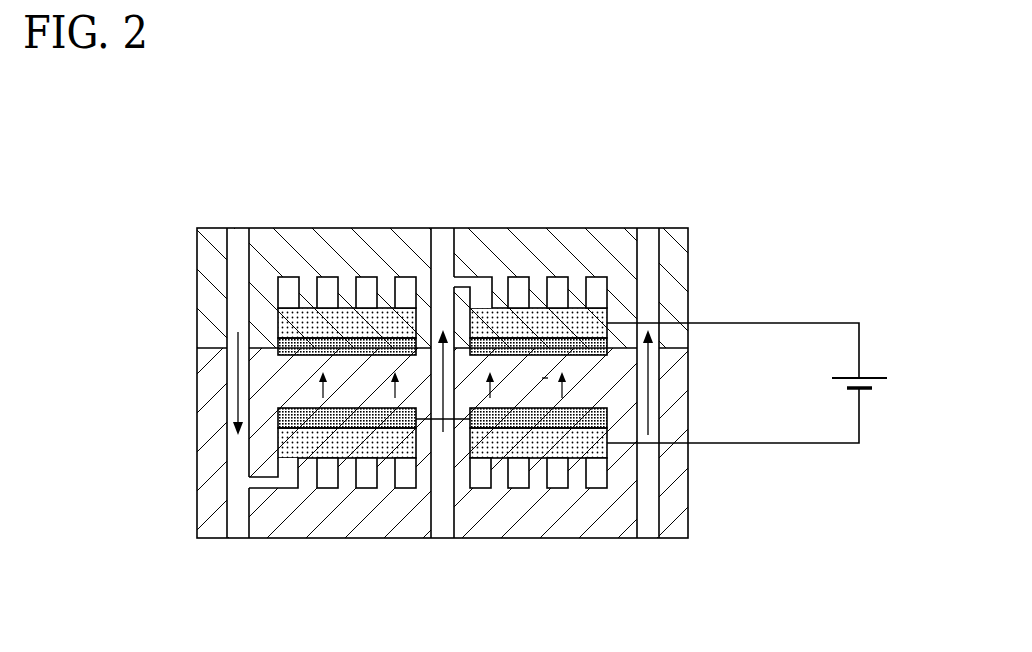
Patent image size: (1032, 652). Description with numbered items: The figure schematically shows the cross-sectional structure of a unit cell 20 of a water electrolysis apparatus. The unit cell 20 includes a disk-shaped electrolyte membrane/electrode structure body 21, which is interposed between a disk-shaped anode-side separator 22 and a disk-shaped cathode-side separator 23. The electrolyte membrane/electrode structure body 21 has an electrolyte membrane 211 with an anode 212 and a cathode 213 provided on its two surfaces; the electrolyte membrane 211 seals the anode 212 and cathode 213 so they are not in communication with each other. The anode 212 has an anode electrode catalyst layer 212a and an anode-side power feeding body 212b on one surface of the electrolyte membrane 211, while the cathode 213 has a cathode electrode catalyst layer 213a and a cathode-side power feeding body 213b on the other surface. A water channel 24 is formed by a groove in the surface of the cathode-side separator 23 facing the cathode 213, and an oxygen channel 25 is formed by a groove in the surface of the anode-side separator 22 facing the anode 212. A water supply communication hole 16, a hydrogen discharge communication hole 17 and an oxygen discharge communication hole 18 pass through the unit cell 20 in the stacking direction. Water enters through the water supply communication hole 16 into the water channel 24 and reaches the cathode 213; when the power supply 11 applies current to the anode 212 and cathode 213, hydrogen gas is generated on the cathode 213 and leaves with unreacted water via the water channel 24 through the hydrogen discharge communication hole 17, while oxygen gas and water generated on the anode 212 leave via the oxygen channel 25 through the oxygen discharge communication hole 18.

The unit cell 20 is at (697, 180).
The anode-side separator 22 is at (667, 253).
The cathode-side separator 23 is at (672, 490).
The power supply 11 is at (870, 377).
The electrolyte membrane/electrode structure body 21 is at (762, 360).
The anode 212 is at (438, 268).
The electrolyte membrane 211 is at (665, 386).
The cathode 213 is at (438, 502).
The anode electrode catalyst layer 212a is at (293, 352).
The anode-side power feeding body 212b is at (297, 325).
The cathode electrode catalyst layer 213a is at (297, 410).
The cathode-side power feeding body 213b is at (297, 440).
The hydrogen discharge communication hole 17 is at (231, 495).
The oxygen discharge communication hole 18 is at (447, 252).
The water supply communication hole 16 is at (643, 505).
The oxygen channel 25 is at (520, 293).
The water channel 24 is at (484, 473).